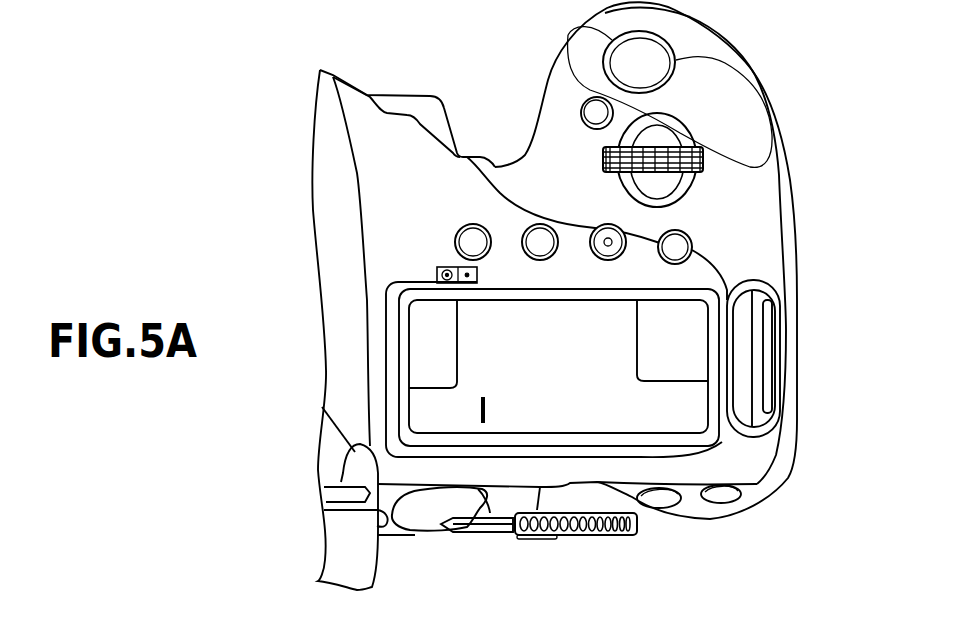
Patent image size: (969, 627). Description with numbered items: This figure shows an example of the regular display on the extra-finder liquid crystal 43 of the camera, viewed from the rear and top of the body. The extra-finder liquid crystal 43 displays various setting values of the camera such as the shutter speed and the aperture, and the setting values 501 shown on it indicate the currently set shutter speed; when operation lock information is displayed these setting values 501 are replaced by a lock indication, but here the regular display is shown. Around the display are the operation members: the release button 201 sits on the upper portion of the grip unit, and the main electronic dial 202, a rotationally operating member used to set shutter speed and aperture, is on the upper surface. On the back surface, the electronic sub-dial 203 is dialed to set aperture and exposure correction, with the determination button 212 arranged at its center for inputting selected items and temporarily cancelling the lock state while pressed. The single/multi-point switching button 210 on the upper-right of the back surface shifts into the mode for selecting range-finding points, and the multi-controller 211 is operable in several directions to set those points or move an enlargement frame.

The extra-finder liquid crystal 43 is at (404, 388).
The setting values 501 is at (470, 327).
The release button 201 is at (740, 77).
The main electronic dial 202 is at (703, 163).
The electronic sub-dial 203 is at (622, 535).
The single/multi-point switching button 210 is at (720, 505).
The multi-controller 211 is at (447, 530).
The determination button 212 is at (538, 536).